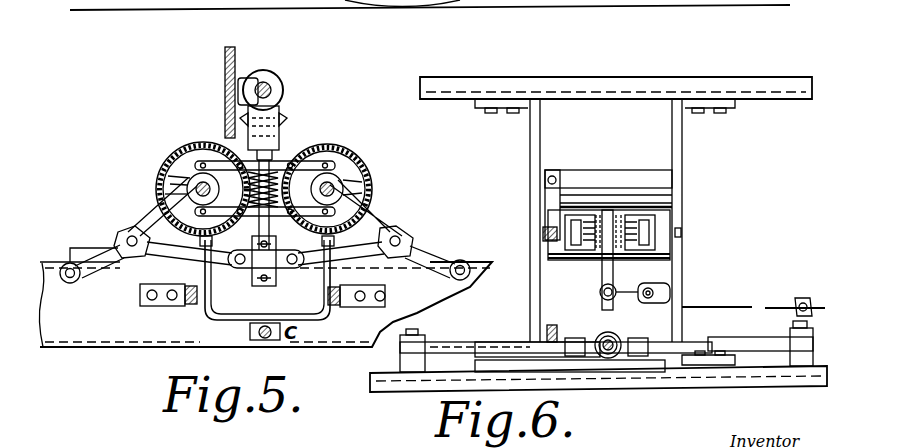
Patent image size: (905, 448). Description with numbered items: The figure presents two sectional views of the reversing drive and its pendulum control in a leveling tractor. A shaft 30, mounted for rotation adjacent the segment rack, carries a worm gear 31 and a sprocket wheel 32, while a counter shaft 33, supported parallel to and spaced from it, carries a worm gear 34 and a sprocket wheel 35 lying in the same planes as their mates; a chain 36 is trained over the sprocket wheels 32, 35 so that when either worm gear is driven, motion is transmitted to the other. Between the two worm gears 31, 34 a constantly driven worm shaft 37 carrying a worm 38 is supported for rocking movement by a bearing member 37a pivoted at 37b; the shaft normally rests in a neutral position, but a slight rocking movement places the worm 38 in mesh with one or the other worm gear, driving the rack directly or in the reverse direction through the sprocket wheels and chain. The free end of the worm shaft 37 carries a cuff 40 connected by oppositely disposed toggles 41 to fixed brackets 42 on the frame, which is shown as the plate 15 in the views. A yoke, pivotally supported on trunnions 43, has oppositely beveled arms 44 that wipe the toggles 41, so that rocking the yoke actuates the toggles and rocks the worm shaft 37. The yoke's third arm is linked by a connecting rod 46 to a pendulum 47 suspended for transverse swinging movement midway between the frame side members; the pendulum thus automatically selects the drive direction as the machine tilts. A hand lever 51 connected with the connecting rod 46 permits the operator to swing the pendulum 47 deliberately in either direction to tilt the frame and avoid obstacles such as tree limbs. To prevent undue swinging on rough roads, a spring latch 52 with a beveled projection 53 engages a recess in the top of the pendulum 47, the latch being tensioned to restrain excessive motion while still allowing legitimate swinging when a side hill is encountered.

In FIG. 5, the base plate 15 is at (135, 350).
In FIG. 6, the base plate 15 is at (765, 77).
In FIG. 5, the shaft 30 is at (340, 170).
In FIG. 5, the worm gear 31 is at (352, 180).
In FIG. 5, the sprocket wheel 32 is at (352, 190).
In FIG. 5, the counter shaft 33 is at (200, 186).
In FIG. 5, the worm gear 34 is at (170, 178).
In FIG. 5, the sprocket wheel 35 is at (170, 196).
In FIG. 5, the chain 36 is at (312, 160).
In FIG. 5, the worm shaft 37 is at (275, 155).
In FIG. 6, the worm shaft 37 is at (605, 358).
In FIG. 5, the bearing member 37a is at (281, 128).
In FIG. 5, the pivot 37b is at (270, 92).
In FIG. 5, the worm 38 is at (259, 258).
In FIG. 5, the cuff 40 is at (273, 313).
In FIG. 6, the cuff 40 is at (598, 336).
In FIG. 5, the toggles 41 is at (118, 265).
In FIG. 6, the toggles 41 is at (760, 342).
In FIG. 5, the brackets 42 is at (70, 283).
In FIG. 6, the brackets 42 is at (803, 353).
In FIG. 5, the trunnions 43 is at (176, 307).
In FIG. 6, the trunnions 43 is at (552, 325).
In FIG. 5, the beveled arms 44 is at (276, 290).
In FIG. 6, the connecting rod 46 is at (614, 277).
In FIG. 6, the pendulum 47 is at (672, 257).
In FIG. 6, the hand lever 51 is at (804, 298).
In FIG. 6, the spring latch 52 is at (552, 202).
In FIG. 6, the beveled projection 53 is at (545, 240).